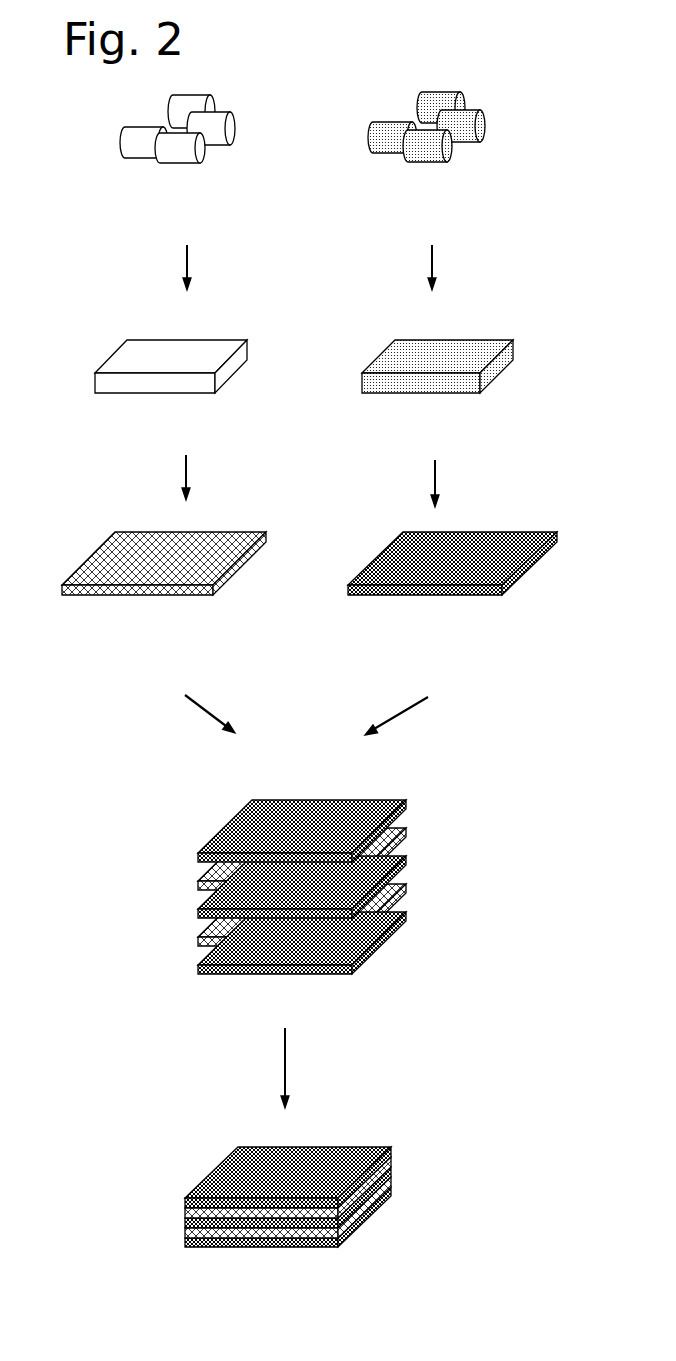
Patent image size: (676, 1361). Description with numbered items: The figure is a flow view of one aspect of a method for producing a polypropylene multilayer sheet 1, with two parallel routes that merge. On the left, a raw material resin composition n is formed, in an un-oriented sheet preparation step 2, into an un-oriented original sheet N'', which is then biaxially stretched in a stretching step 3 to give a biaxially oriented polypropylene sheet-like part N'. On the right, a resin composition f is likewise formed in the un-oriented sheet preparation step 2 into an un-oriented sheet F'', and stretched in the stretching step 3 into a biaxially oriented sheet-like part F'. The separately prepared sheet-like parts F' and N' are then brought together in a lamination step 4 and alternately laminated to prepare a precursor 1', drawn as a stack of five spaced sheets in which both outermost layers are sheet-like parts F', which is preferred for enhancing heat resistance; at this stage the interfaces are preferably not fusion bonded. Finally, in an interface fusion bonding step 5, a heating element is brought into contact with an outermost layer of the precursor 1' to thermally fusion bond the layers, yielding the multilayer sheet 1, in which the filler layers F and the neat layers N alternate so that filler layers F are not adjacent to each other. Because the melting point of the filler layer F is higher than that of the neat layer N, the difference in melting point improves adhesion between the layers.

The resin composition n is at (168, 163).
The resin composition f is at (422, 157).
The un-oriented sheet preparation step 2 is at (182, 267).
The un-oriented sheet N'' is at (171, 395).
The un-oriented sheet F'' is at (437, 395).
The stretching step 3 is at (183, 477).
The biaxially oriented sheet-like part N' is at (268, 739).
The biaxially oriented sheet-like part F' is at (377, 753).
The lamination step 4 is at (197, 713).
The precursor 1' is at (485, 920).
The interface fusion bonding step 5 is at (289, 1067).
The filler layer F is at (259, 1197).
The neat layer N is at (240, 1197).
The multilayer sheet 1 is at (292, 1197).